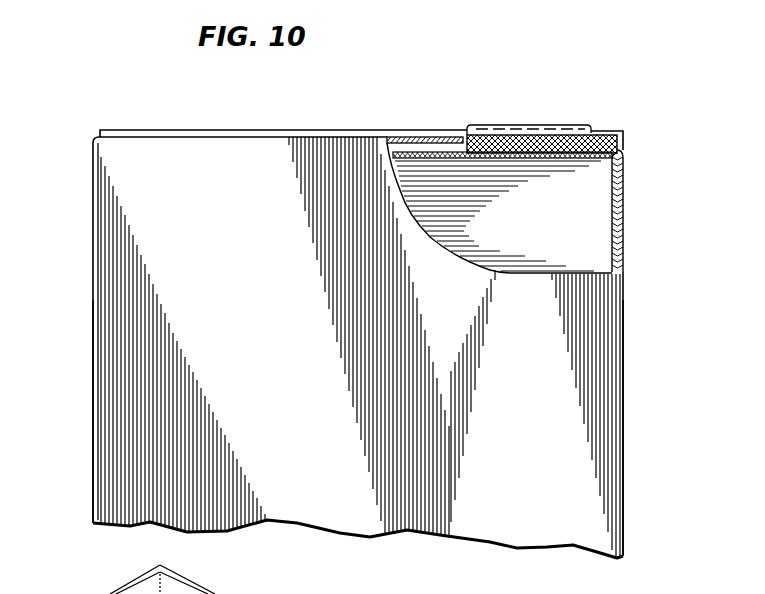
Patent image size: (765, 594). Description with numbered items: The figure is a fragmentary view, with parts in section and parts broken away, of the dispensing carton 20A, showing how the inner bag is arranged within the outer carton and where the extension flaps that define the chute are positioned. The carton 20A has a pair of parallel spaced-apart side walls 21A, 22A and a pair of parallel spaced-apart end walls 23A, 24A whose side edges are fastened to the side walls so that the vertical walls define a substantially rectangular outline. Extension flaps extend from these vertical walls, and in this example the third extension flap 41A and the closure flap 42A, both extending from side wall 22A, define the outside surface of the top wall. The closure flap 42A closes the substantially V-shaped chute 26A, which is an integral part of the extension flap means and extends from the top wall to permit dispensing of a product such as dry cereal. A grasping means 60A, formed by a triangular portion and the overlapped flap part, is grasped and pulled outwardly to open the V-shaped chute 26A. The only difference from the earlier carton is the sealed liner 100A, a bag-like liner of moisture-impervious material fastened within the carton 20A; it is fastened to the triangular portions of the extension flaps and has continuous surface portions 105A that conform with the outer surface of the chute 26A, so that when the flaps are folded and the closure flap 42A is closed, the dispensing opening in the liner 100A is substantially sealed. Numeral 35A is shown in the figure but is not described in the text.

The dispensing carton 20A is at (120, 73).
The third extension flap 41A is at (284, 130).
The sealing strip 35A is at (407, 136).
The closure flap 42A is at (477, 133).
The grasping means 60A is at (620, 138).
The sealed liner 100A is at (605, 188).
The side wall 22A is at (593, 255).
The end wall 23A is at (93, 381).
The end wall 24A is at (623, 400).
The side wall 21A is at (492, 530).
The V-shaped chute 26A is at (98, 593).
The conforming surface portions of liner 105A is at (187, 593).